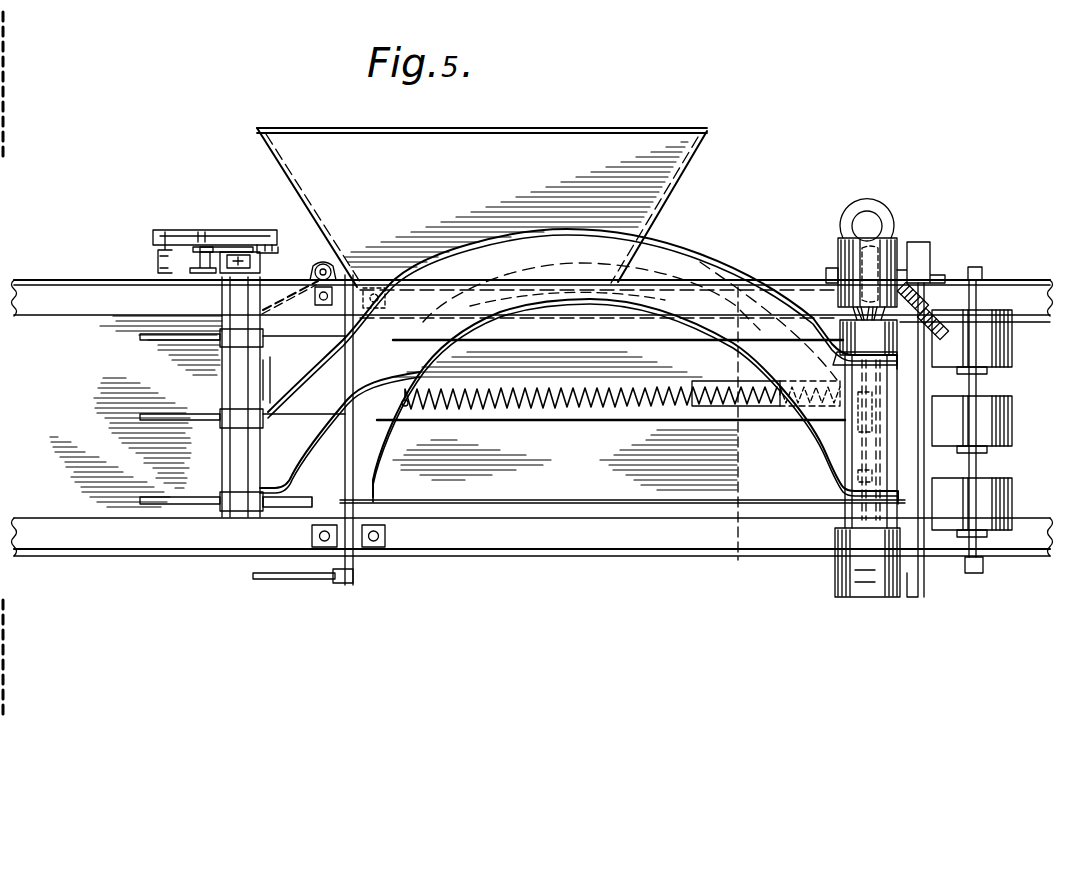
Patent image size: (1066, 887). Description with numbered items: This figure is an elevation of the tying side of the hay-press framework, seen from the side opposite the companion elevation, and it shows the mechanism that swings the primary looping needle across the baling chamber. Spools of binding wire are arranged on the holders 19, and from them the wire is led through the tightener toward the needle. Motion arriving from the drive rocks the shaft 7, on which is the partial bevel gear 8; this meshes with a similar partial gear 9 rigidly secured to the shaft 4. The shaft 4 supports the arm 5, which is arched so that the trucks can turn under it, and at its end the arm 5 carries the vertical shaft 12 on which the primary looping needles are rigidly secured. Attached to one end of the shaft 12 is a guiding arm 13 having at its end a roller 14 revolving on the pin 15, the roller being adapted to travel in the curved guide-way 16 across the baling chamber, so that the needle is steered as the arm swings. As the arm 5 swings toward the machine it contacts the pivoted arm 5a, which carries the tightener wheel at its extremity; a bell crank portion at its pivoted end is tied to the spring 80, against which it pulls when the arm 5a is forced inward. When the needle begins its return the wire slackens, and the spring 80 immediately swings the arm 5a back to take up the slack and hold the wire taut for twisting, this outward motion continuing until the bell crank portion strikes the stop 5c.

The shaft 4 is at (862, 598).
The arm 5 is at (690, 254).
The pivoted arm 5a is at (405, 375).
The stop 5c is at (838, 354).
The shaft 7 is at (870, 222).
The partial bevel gear 8 is at (922, 283).
The partial gear 9 is at (898, 322).
The vertical shaft 12 is at (253, 250).
The guiding arm 13 is at (197, 268).
The roller 14 is at (205, 237).
The pin 15 is at (158, 258).
The curved guide-way 16 is at (270, 233).
The holders 19 is at (1030, 497).
The spring 80 is at (588, 410).